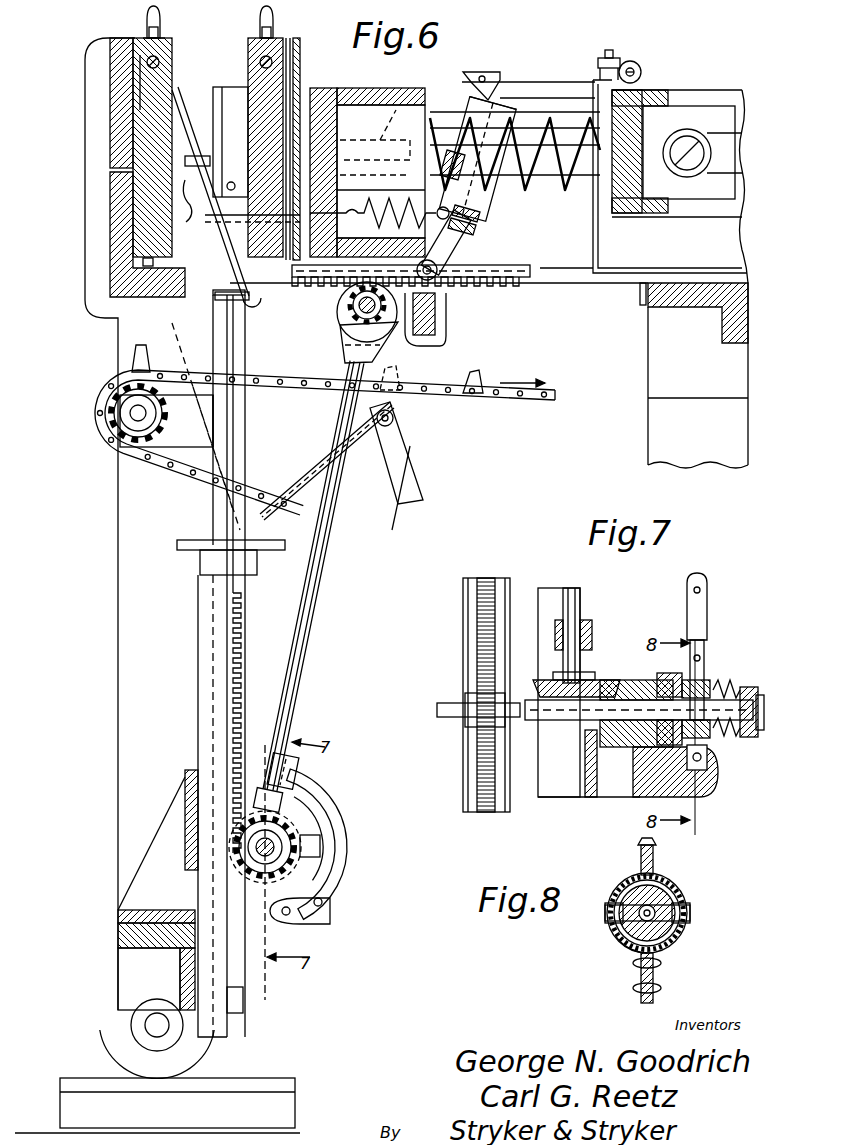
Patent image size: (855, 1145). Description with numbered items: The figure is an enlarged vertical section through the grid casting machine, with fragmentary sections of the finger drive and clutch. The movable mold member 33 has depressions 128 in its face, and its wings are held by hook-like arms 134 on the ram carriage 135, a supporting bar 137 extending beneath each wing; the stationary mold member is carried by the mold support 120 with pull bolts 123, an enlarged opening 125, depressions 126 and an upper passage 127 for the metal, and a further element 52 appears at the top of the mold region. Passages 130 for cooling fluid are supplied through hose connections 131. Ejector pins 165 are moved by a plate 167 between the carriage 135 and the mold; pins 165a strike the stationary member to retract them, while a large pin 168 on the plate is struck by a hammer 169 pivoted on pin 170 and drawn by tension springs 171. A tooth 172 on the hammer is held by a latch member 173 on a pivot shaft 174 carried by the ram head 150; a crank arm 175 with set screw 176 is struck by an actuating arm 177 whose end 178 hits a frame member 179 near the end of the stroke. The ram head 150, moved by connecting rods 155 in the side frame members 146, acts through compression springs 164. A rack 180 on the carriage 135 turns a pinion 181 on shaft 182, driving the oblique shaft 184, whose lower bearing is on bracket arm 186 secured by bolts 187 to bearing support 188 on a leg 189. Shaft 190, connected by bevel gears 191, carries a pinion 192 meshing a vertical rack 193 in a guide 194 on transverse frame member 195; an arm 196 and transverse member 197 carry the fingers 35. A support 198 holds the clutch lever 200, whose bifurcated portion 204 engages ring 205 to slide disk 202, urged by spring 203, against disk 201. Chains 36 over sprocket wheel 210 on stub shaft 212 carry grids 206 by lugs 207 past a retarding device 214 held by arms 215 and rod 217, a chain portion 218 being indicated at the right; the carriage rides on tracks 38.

In FIG. 6, the movable mold member 33 is at (284, 40).
In FIG. 6, the fingers 35 is at (190, 90).
In FIG. 6, the conveyor chains 36 is at (302, 387).
In FIG. 6, the tracks 38 is at (258, 1095).
In FIG. 6, the cap 52 is at (150, 33).
In FIG. 6, the mold support 120 is at (120, 228).
In FIG. 7, the horizontal pull bolts 123 is at (632, 680).
In FIG. 6, the enlarged opening 125 is at (120, 165).
In FIG. 6, the depressions 126 is at (188, 214).
In FIG. 6, the passage 127 is at (160, 62).
In FIG. 6, the depressions 128 is at (250, 200).
In FIG. 6, the passages for cooling fluid 130 is at (125, 70).
In FIG. 6, the hose connections 131 is at (162, 22).
In FIG. 6, the hook-like arms 134 is at (240, 95).
In FIG. 6, the ram carriage 135 is at (366, 88).
In FIG. 6, the supporting bar 137 is at (250, 226).
In FIG. 6, the side frame members 146 is at (698, 289).
In FIG. 6, the ram head 150 is at (630, 205).
In FIG. 6, the connecting rods 155 is at (725, 158).
In FIG. 6, the compression springs 164 is at (548, 192).
In FIG. 6, the ejector pins 165 is at (300, 86).
In FIG. 6, the pins 165a is at (243, 144).
In FIG. 6, the plate 167 is at (300, 42).
In FIG. 6, the large pin 168 is at (405, 95).
In FIG. 6, the hammer 169 is at (498, 115).
In FIG. 6, the pivot pin 170 is at (447, 315).
In FIG. 6, the coiled tension springs 171 is at (480, 212).
In FIG. 6, the tooth 172 is at (505, 100).
In FIG. 6, the latch member 173 is at (570, 80).
In FIG. 6, the pivot shaft 174 is at (641, 70).
In FIG. 6, the crank arm 175 is at (625, 60).
In FIG. 6, the set screw 176 is at (610, 58).
In FIG. 6, the actuating arm 177 is at (692, 105).
In FIG. 6, the end of actuating arm 178 is at (641, 296).
In FIG. 6, the frame member 179 is at (666, 310).
In FIG. 6, the toothed rack 180 is at (520, 286).
In FIG. 6, the pinion 181 is at (358, 306).
In FIG. 6, the horizontal shaft 182 is at (350, 328).
In FIG. 6, the oblique shaft 184 is at (308, 648).
In FIG. 7, the oblique shaft 184 is at (571, 590).
In FIG. 6, the bracket arm 186 is at (330, 792).
In FIG. 7, the bracket arm 186 is at (592, 625).
In FIG. 6, the bolts 187 is at (302, 913).
In FIG. 6, the bearing support 188 is at (437, 316).
In FIG. 7, the bearing support 188 is at (585, 790).
In FIG. 6, the legs 189 is at (208, 666).
In FIG. 7, the legs 189 is at (540, 600).
In FIG. 6, the horizontal shaft 190 is at (284, 847).
In FIG. 8, the horizontal shaft 190 is at (682, 900).
In FIG. 6, the bevel gears 191 is at (252, 806).
In FIG. 7, the bevel gears 191 is at (595, 680).
In FIG. 6, the pinion 192 is at (238, 838).
In FIG. 7, the pinion 192 is at (470, 722).
In FIG. 7, the vertical rack 193 is at (480, 580).
In FIG. 6, the guide 194 is at (213, 620).
In FIG. 6, the transverse frame member 195 is at (128, 856).
In FIG. 6, the arm 196 is at (222, 507).
In FIG. 6, the transverse member 197 is at (185, 160).
In FIG. 7, the support 198 is at (640, 770).
In FIG. 8, the support 198 is at (655, 1002).
In FIG. 7, the clutch lever 200 is at (707, 610).
In FIG. 8, the clutch lever 200 is at (660, 963).
In FIG. 8, the clutch disk 201 is at (641, 848).
In FIG. 7, the clutch disk 202 is at (685, 680).
In FIG. 7, the coiled spring 203 is at (745, 745).
In FIG. 8, the bifurcated portion 204 is at (612, 905).
In FIG. 7, the ring 205 is at (712, 760).
In FIG. 8, the ring 205 is at (625, 940).
In FIG. 6, the grids 206 is at (418, 385).
In FIG. 6, the lugs 207 is at (395, 390).
In FIG. 7, the lugs 207 is at (690, 770).
In FIG. 6, the sprocket wheel 210 is at (214, 428).
In FIG. 6, the stub shaft 212 is at (136, 415).
In FIG. 6, the retarding device 214 is at (350, 455).
In FIG. 6, the supporting arms 215 is at (400, 480).
In FIG. 6, the transverse rod 217 is at (394, 498).
In FIG. 6, the chain run 218 is at (512, 400).